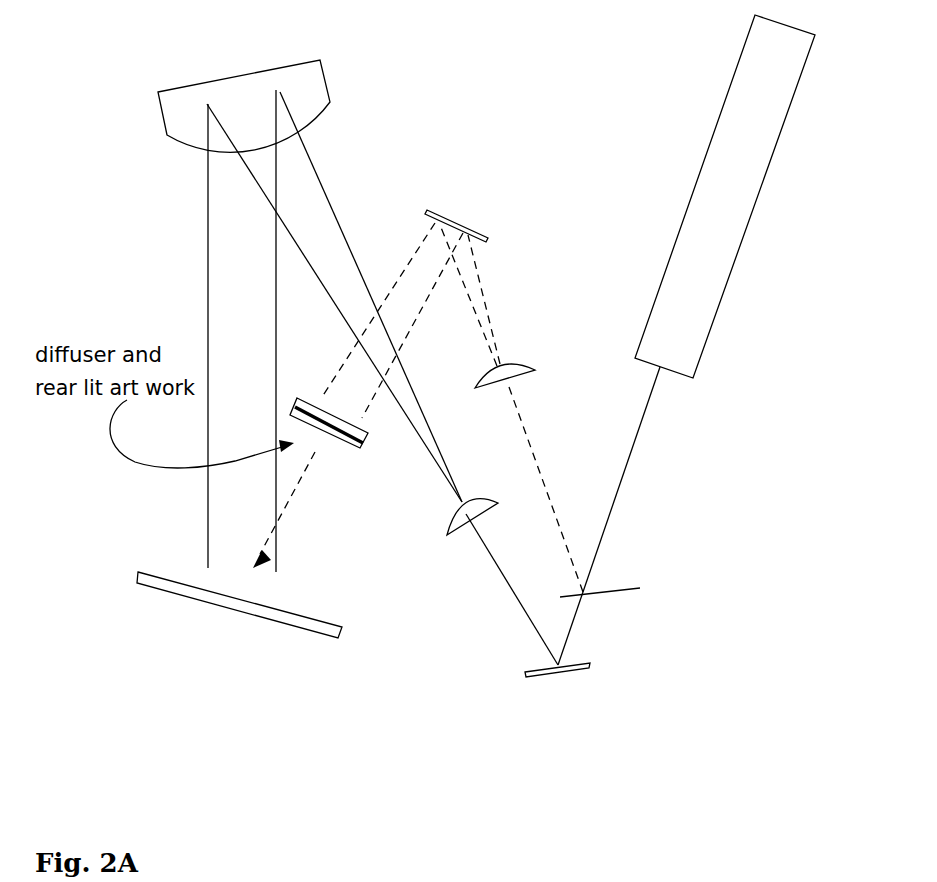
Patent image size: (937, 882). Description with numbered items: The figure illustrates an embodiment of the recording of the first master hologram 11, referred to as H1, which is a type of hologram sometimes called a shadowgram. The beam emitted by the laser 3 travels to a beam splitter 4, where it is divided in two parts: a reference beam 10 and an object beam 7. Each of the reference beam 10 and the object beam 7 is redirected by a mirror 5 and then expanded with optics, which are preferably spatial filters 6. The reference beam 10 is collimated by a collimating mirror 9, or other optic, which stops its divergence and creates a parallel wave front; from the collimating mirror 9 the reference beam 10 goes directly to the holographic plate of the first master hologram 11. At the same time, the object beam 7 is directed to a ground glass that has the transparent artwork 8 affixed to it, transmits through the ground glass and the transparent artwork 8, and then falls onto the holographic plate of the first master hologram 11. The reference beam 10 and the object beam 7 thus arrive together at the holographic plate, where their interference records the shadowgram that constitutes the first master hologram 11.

The laser 3 is at (738, 196).
The beam splitter 4 is at (664, 583).
The mirror 5 is at (516, 452).
The spatial filter 6 is at (511, 493).
The object beam 7 is at (441, 407).
The transparent artwork 8 is at (329, 437).
The collimating mirror 9 is at (206, 94).
The reference beam 10 is at (248, 331).
The first master hologram 11 is at (239, 624).